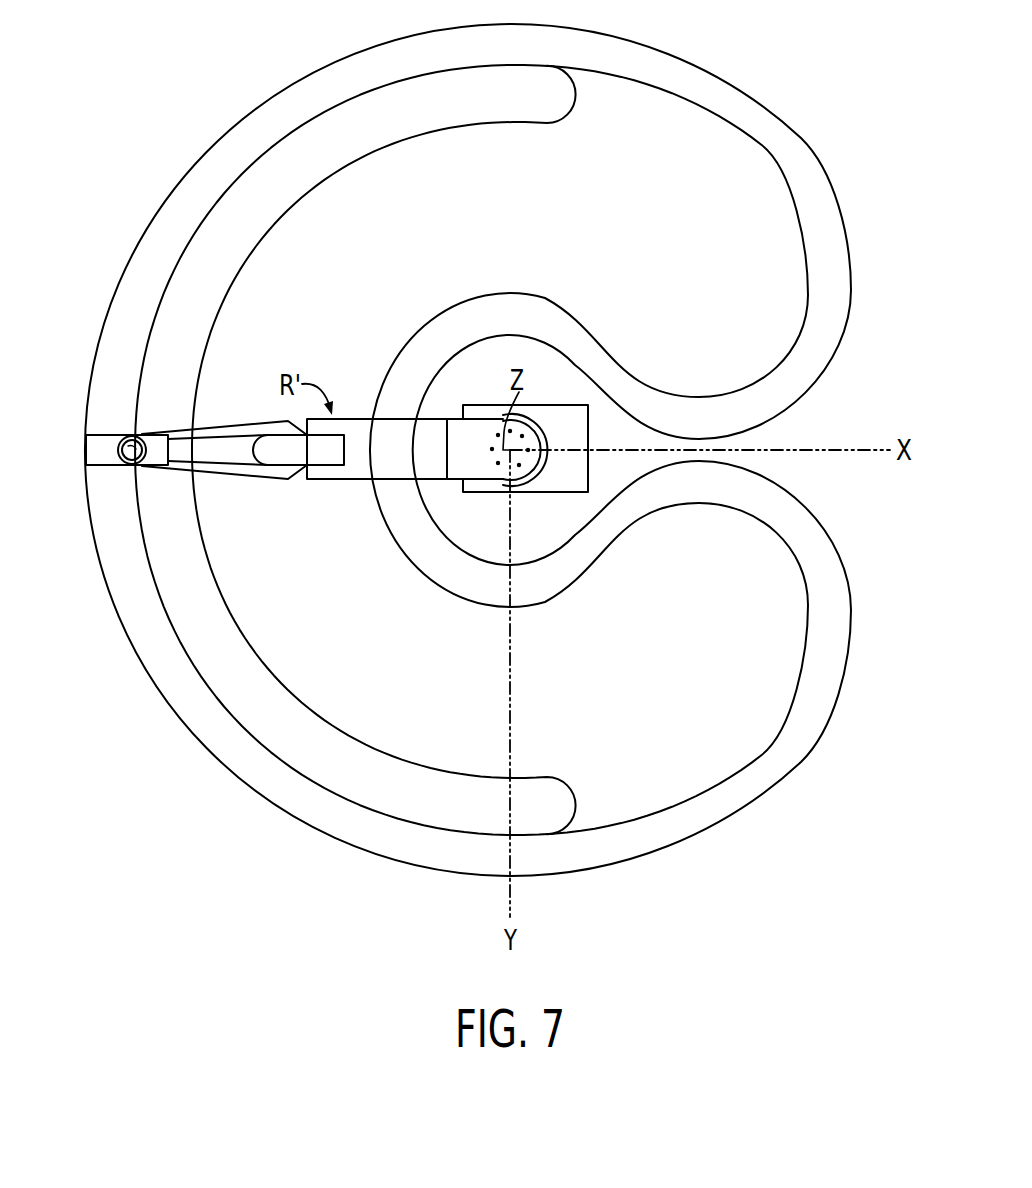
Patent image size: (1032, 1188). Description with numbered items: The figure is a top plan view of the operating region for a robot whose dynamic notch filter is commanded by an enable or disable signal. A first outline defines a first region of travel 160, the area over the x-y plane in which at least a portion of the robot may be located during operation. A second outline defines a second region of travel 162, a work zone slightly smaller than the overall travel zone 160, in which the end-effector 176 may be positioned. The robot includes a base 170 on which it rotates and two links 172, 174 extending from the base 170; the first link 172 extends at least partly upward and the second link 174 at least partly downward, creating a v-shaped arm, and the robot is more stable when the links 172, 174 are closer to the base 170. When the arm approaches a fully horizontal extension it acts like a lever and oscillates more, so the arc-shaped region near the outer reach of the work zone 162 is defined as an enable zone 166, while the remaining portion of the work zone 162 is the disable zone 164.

The first region of travel 160 is at (797, 142).
The second region of travel 162 is at (726, 131).
The disable zone 164 is at (490, 222).
The enable zone 166 is at (490, 108).
The base 170 is at (504, 493).
The first link 172 is at (353, 481).
The second link 174 is at (228, 479).
The end-effector 176 is at (120, 450).